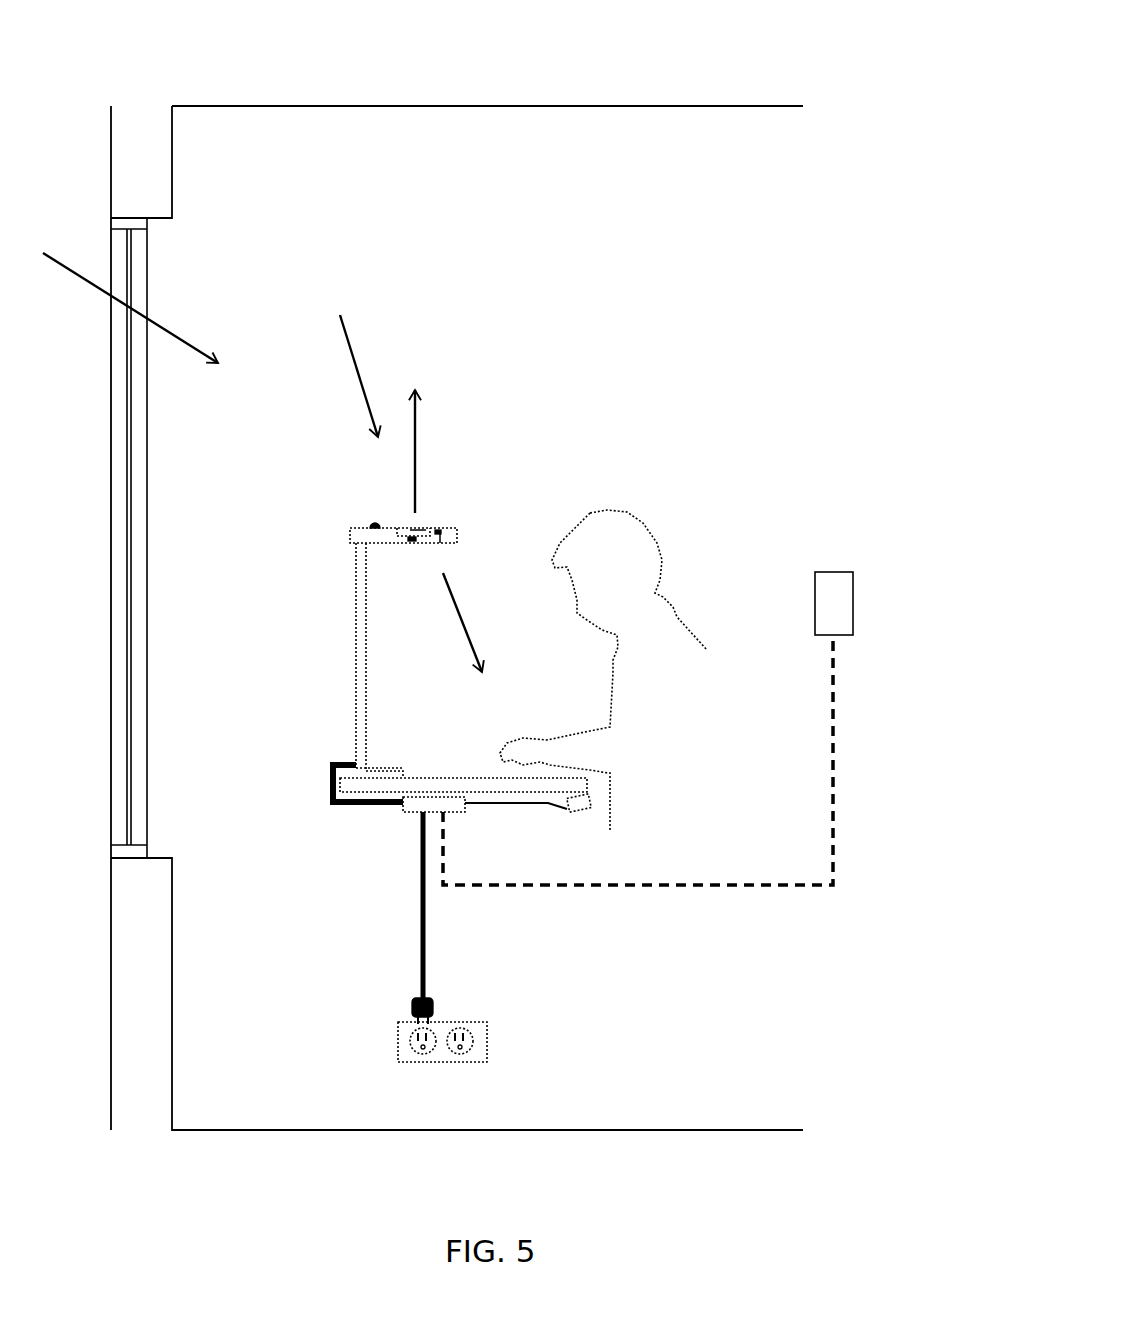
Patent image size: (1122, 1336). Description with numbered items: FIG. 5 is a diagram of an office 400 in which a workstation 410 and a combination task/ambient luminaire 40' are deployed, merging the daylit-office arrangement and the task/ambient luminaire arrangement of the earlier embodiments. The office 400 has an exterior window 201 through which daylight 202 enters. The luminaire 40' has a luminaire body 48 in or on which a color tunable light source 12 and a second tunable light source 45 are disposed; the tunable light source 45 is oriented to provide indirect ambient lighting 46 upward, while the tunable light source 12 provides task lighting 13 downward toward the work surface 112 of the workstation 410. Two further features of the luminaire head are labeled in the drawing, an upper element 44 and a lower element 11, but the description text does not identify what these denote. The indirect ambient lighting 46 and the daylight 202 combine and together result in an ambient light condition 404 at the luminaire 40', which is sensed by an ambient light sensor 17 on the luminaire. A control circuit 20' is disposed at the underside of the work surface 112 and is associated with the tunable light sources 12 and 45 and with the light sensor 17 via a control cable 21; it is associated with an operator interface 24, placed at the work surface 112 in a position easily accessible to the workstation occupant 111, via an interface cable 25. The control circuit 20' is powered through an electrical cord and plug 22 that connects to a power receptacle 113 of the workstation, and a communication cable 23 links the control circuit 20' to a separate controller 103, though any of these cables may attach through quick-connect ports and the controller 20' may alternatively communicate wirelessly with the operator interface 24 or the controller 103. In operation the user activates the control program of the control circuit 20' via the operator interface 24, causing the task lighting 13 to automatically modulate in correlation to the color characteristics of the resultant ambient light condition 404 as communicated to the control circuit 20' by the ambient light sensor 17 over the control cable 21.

The office 400 is at (873, 80).
The exterior window 201 is at (130, 653).
The daylight 202 is at (170, 333).
The ambient light condition 404 is at (350, 345).
The indirect ambient lighting 46 is at (415, 443).
The workstation 410 is at (588, 433).
The workstation occupant 111 is at (590, 517).
The luminaire 40' is at (362, 653).
The tunable light source 45 is at (410, 528).
The ambient light sensor 17 is at (377, 527).
The upward light source 44 is at (418, 527).
The luminaire body 48 is at (455, 530).
The color tunable light source 12 is at (440, 543).
The lamp head 11 is at (450, 545).
The task lighting 13 is at (473, 648).
The work surface 112 is at (480, 778).
The control cable 21 is at (372, 807).
The control circuit 20' is at (468, 829).
The interface cable 25 is at (530, 805).
The operator interface 24 is at (587, 812).
The electrical cord and plug 22 is at (426, 965).
The communication cable 23 is at (540, 887).
The controller 103 is at (853, 607).
The power receptacle 113 is at (413, 1033).